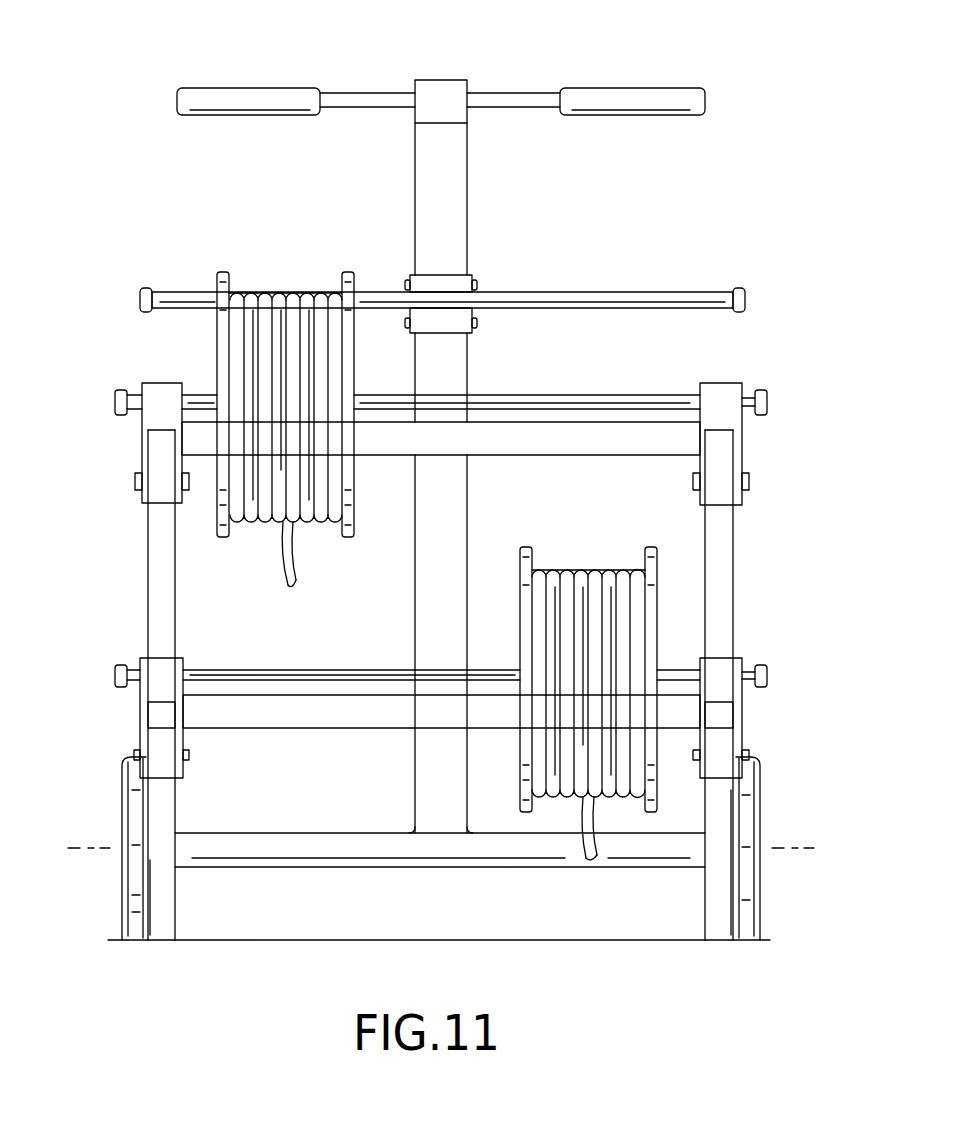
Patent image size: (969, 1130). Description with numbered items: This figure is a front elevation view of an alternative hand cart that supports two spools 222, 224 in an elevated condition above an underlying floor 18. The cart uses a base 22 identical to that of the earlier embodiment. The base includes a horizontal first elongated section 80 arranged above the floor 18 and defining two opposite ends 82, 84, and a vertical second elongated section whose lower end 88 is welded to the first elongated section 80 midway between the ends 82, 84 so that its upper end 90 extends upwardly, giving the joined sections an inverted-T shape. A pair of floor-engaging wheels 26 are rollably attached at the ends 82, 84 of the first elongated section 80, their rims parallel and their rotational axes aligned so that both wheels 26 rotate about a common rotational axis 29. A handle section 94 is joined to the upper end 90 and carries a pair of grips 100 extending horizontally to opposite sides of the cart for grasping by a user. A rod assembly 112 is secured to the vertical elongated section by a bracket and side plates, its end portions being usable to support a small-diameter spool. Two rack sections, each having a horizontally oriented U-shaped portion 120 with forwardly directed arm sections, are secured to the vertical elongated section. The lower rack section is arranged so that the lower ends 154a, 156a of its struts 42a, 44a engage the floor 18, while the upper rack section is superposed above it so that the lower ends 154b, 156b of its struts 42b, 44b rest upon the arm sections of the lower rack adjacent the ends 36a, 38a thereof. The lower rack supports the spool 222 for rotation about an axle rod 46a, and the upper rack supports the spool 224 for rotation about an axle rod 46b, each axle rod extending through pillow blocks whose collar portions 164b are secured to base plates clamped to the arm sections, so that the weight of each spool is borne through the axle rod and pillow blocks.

The handle section 94 is at (180, 88).
The grips 100 is at (292, 117).
The upper end of second elongated section 90 is at (469, 176).
The base 22 is at (469, 215).
The rod assembly 112 is at (472, 276).
The lower end of second elongated section 88 is at (413, 783).
The axle rod 46b is at (605, 395).
The collar portion 164b is at (140, 420).
The strut 42b is at (148, 590).
The strut 44b is at (735, 525).
The spool 224 is at (218, 370).
The spool 222 is at (598, 605).
The first elongated section 80 is at (645, 868).
The end of first elongated section 84 is at (700, 866).
The axle rod 46a is at (247, 668).
The U-shaped portion 120 is at (305, 728).
The lower end of strut 154b is at (140, 700).
The end of elongated section 36a is at (148, 715).
The lower end of strut 156b is at (745, 688).
The end of elongated section 38a is at (745, 730).
The floor-engaging wheel 26 is at (123, 790).
The lower end of strut 154a is at (140, 945).
The lower end of strut 156a is at (747, 940).
The floor 18 is at (118, 938).
The common rotational axis 29 is at (798, 848).
The end of first elongated section 82 is at (200, 867).
The strut 42a is at (165, 912).
The strut 44a is at (735, 803).